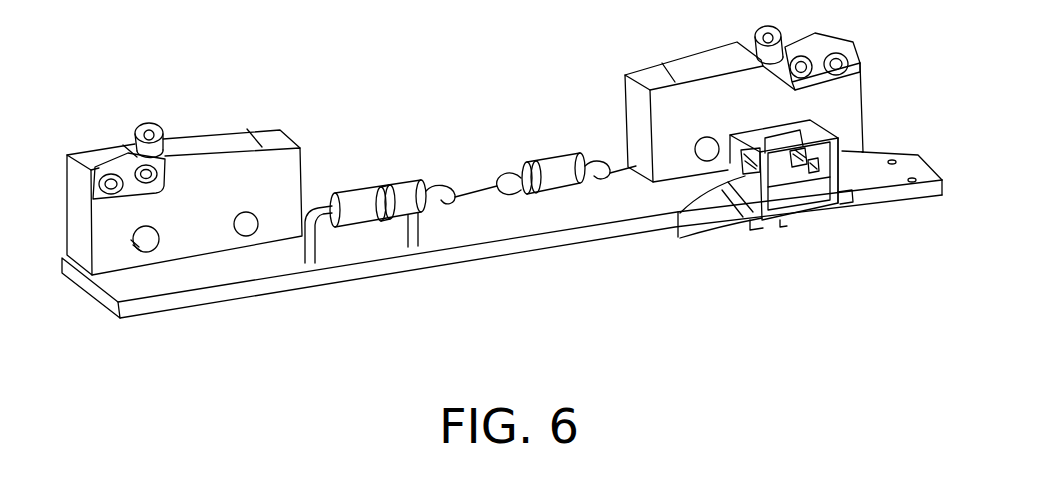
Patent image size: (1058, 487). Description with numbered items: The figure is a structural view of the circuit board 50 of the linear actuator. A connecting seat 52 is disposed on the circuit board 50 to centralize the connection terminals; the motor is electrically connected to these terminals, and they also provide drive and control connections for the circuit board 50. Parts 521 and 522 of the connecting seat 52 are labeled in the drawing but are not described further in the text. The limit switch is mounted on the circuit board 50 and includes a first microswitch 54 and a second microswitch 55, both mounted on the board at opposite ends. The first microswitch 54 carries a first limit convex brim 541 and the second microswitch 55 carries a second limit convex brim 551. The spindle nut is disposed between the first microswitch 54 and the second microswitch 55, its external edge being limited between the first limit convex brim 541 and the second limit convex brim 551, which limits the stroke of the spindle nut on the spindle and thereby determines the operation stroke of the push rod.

The circuit board 50 is at (505, 231).
The connecting seat 52 is at (768, 219).
The connector socket 521 is at (758, 170).
The connector tab 522 is at (843, 200).
The first microswitch 54 is at (184, 224).
The first limit convex brim 541 is at (146, 121).
The second microswitch 55 is at (780, 92).
The second limit convex brim 551 is at (763, 25).